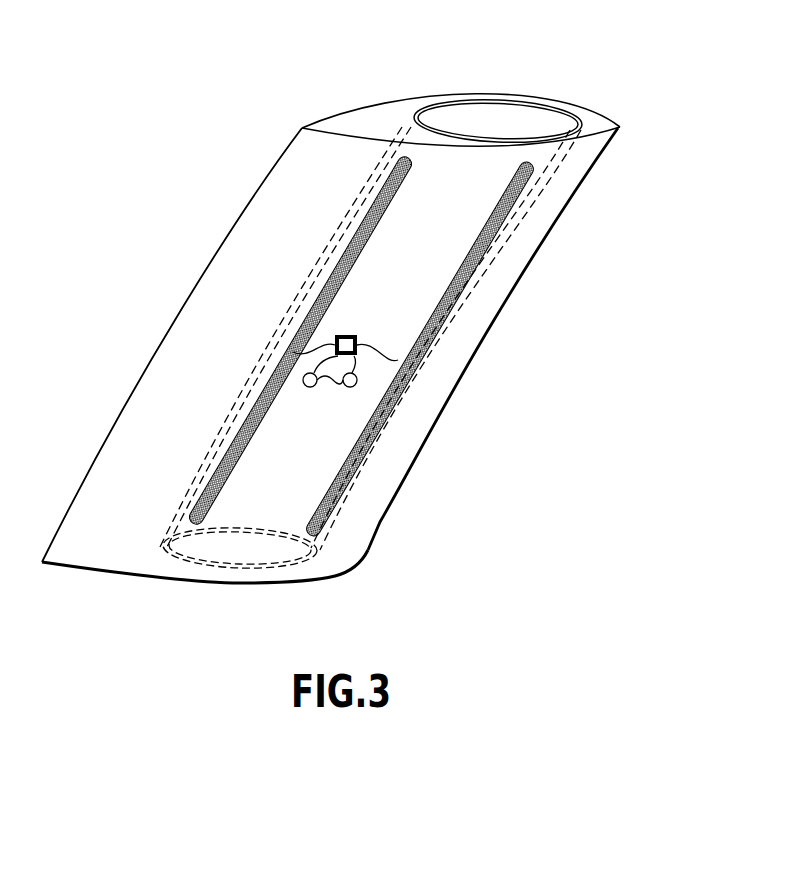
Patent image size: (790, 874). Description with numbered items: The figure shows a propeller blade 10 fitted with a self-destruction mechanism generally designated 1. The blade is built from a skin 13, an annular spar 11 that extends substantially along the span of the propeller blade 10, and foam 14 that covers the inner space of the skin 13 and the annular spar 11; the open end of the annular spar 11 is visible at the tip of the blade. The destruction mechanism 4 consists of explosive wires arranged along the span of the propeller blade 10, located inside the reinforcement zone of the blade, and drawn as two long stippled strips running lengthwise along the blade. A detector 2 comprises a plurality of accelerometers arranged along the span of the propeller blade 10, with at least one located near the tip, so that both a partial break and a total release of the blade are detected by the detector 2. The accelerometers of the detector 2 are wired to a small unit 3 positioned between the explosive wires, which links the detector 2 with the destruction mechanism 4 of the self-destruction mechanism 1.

The self-destruction mechanism 1 is at (333, 257).
The detector 2 is at (303, 380).
The control unit 3 is at (357, 335).
The destruction mechanism 4 is at (480, 247).
The propeller blade 10 is at (623, 118).
The annular spar 11 is at (478, 103).
The skin 13 is at (370, 108).
The foam 14 is at (595, 127).